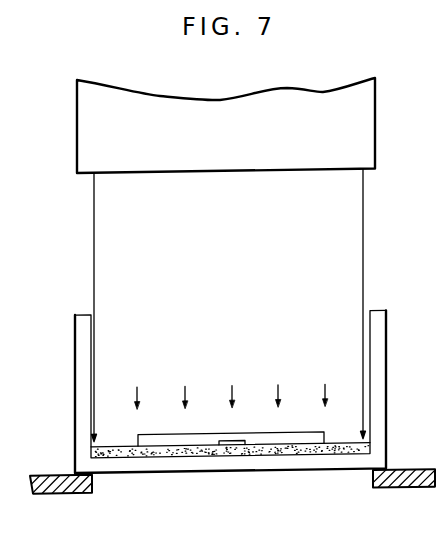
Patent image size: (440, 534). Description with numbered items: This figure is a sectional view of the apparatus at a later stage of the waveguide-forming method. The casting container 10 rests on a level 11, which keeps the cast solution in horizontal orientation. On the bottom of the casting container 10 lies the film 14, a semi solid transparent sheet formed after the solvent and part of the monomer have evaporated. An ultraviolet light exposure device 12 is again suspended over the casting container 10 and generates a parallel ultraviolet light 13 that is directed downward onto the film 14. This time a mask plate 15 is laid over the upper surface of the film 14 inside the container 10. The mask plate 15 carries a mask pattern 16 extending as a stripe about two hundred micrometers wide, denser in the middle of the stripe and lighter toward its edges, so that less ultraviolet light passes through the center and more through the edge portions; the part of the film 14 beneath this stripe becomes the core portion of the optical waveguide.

The casting container 10 is at (153, 467).
The level 11 is at (402, 502).
The ultraviolet light exposure device 12 is at (375, 146).
The parallel ultraviolet light 13 is at (388, 245).
The film 14 is at (340, 449).
The mask plate 15 is at (295, 436).
The mask pattern 16 is at (240, 446).